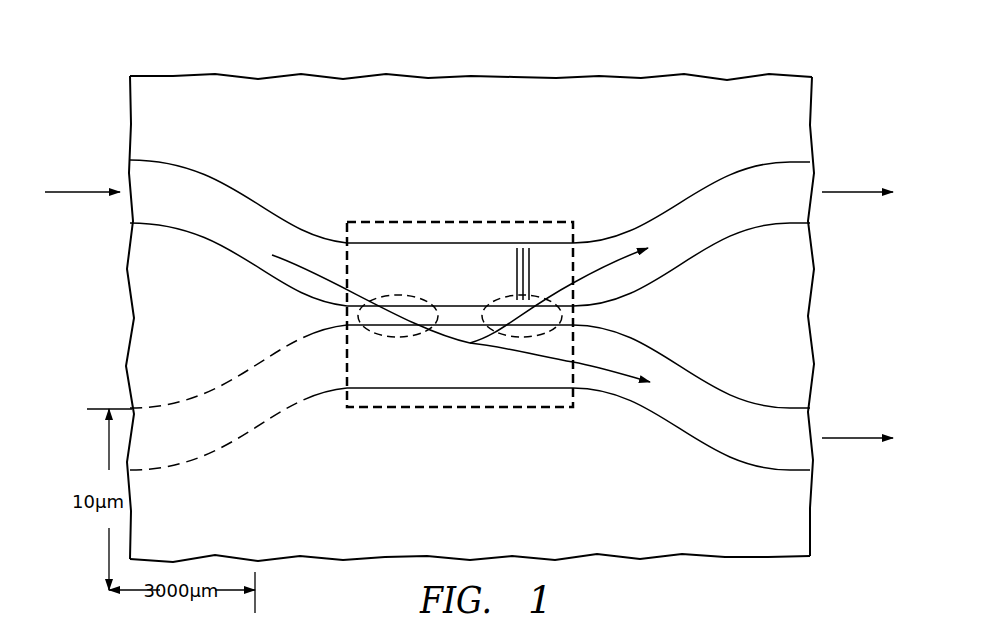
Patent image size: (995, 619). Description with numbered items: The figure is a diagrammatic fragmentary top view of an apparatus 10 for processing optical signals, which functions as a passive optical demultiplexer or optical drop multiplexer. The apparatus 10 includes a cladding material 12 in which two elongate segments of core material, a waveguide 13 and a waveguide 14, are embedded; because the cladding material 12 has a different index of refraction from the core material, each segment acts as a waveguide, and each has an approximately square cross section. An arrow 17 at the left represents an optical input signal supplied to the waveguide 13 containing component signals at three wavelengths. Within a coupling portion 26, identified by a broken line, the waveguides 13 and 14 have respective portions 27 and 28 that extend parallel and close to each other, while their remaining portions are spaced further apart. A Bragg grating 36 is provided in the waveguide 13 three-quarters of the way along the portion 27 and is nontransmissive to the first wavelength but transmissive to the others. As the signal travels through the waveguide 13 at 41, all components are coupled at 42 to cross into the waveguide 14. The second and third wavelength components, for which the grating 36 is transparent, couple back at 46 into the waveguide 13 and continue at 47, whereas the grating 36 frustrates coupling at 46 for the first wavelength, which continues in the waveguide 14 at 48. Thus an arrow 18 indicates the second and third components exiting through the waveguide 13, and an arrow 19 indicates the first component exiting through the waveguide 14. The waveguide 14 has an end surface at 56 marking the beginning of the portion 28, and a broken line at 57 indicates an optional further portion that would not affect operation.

The apparatus 10 is at (641, 54).
The cladding material 12 is at (337, 84).
The waveguide 13 is at (683, 197).
The waveguide 14 is at (683, 433).
The arrow 17 is at (83, 196).
The arrow 18 is at (850, 196).
The arrow 19 is at (850, 442).
The coupling portion 26 is at (395, 220).
The portion 27 is at (452, 247).
The portion 28 is at (447, 392).
The Bragg grating 36 is at (535, 273).
The optical signal traveling through waveguide 41 is at (370, 300).
The coupling location 42 is at (385, 337).
The coupling location 46 is at (500, 300).
The propagation path 47 is at (628, 262).
The propagation path 48 is at (628, 364).
The end surface 56 is at (347, 356).
The further portion 57 is at (212, 457).